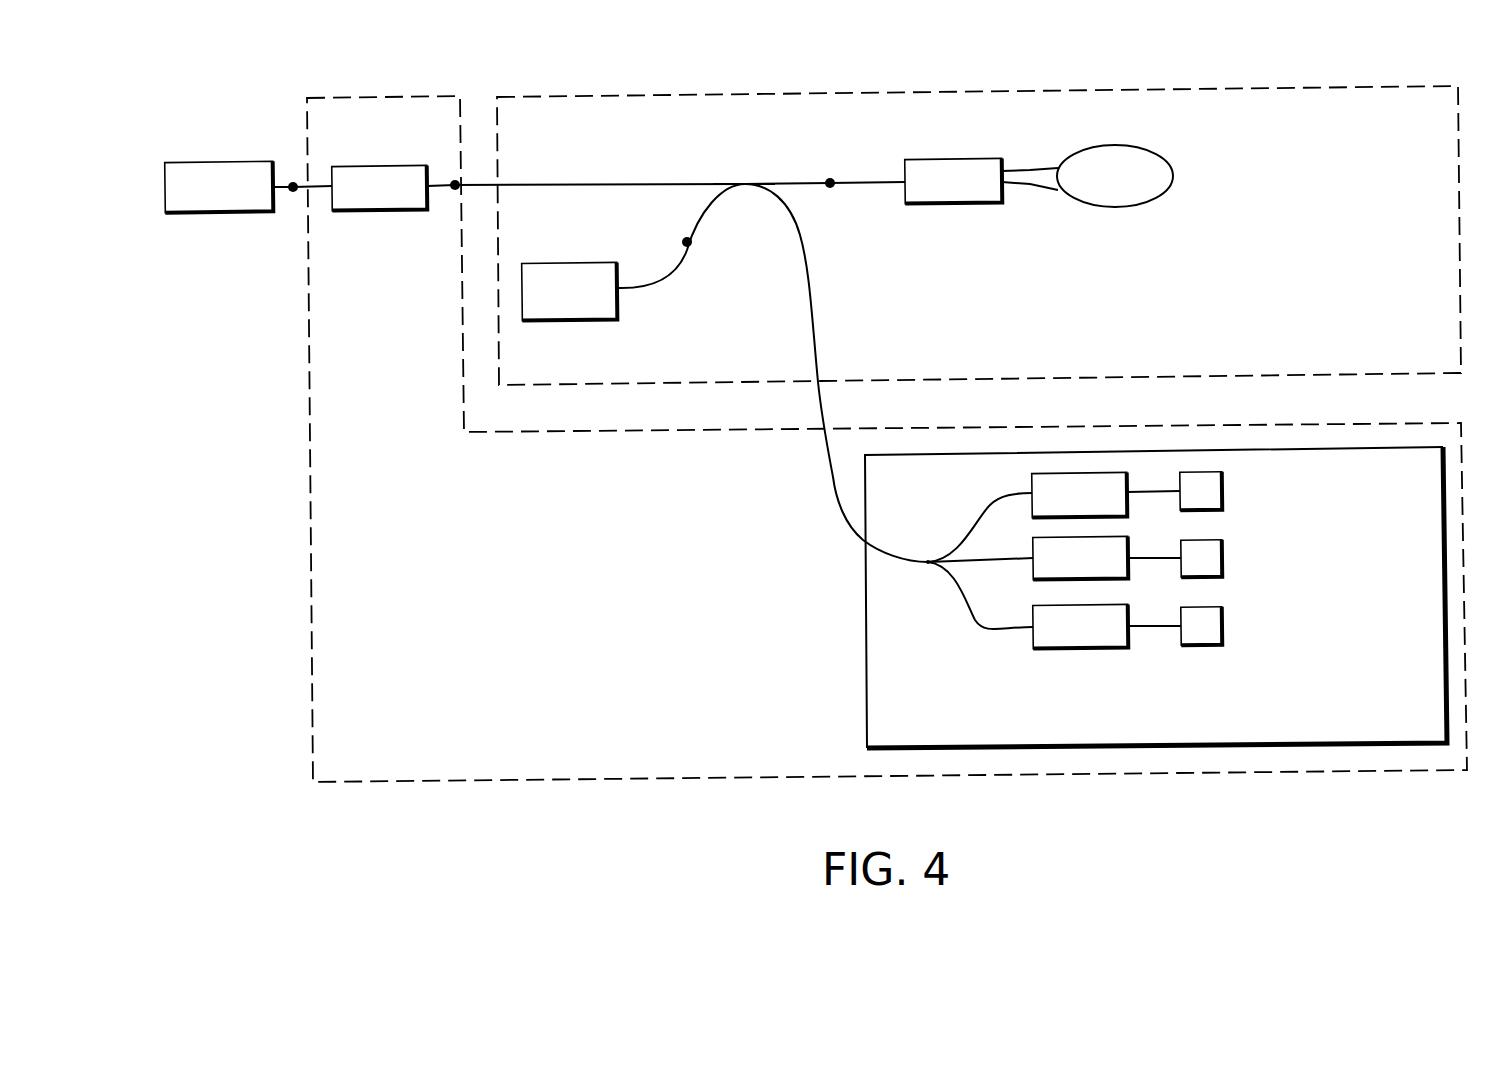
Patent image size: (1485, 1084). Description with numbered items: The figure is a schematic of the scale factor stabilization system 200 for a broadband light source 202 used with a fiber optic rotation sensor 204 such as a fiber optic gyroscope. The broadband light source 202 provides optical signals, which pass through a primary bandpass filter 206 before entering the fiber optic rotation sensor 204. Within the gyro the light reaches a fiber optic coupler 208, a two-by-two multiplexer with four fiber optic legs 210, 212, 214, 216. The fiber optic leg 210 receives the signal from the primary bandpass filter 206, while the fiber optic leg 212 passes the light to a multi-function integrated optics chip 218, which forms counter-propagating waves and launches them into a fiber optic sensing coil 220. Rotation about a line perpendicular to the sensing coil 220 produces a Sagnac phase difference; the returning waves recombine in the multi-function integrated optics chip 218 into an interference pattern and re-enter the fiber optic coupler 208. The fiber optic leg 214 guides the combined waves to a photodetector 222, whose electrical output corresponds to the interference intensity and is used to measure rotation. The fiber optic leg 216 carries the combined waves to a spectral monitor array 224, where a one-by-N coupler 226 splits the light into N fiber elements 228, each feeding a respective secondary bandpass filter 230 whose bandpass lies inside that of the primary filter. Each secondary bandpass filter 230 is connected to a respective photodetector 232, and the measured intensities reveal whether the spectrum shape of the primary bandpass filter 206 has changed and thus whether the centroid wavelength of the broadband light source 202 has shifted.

The scale factor stabilization system 200 is at (632, 782).
The broadband light source 202 is at (205, 214).
The fiber optic rotation sensor 204 is at (1070, 92).
The primary bandpass filter 206 is at (380, 212).
The fiber optic coupler 208 is at (745, 172).
The fiber optic leg 210 is at (634, 183).
The fiber optic leg 212 is at (795, 183).
The fiber optic leg 214 is at (695, 225).
The fiber optic leg 216 is at (833, 477).
The multi-function integrated optics chip 218 is at (948, 159).
The fiber optic sensing coil 220 is at (1150, 152).
The photodetector 222 is at (578, 322).
The spectral monitor array 224 is at (865, 688).
The 1xN coupler 226 is at (923, 572).
The fiber elements 228 is at (973, 520).
The secondary bandpass filters 230 is at (1106, 560).
The photodetectors 232 is at (1223, 490).